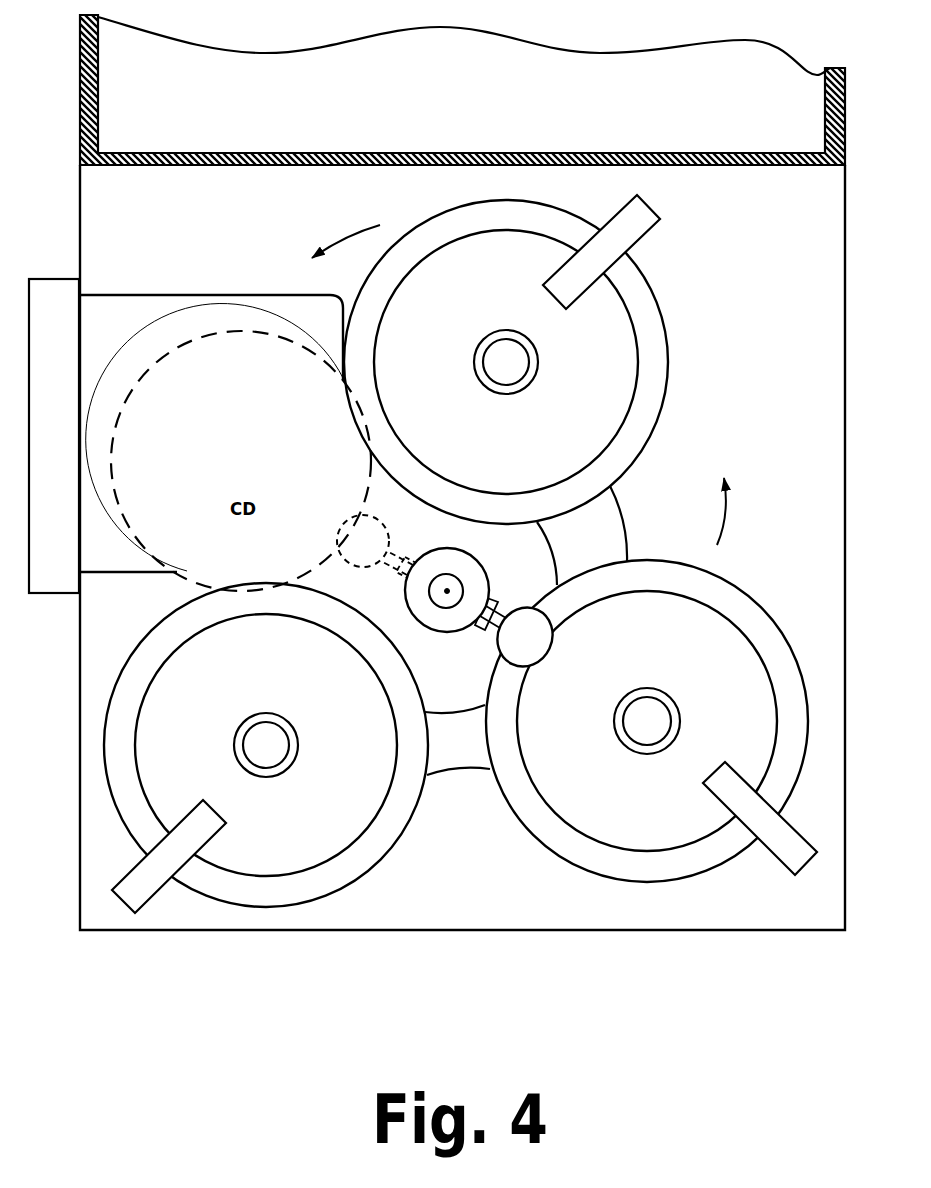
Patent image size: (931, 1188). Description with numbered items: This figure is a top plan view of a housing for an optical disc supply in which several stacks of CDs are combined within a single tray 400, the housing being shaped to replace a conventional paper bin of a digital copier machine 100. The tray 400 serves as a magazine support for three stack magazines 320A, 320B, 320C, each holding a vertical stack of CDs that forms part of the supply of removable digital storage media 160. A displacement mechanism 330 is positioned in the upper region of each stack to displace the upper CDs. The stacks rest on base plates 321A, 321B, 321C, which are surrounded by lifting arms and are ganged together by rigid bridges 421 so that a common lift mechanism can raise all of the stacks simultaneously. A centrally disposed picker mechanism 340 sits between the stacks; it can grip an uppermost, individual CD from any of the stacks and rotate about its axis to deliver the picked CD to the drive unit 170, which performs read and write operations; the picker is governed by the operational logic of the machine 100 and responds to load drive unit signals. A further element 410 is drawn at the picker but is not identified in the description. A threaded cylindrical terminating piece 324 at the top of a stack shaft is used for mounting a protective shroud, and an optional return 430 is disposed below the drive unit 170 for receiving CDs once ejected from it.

The digital copier machine 100 is at (168, 131).
The supply of removable digital storage media 160 is at (168, 236).
The drive unit 170 is at (123, 329).
The return 430 is at (70, 579).
The stack magazine 320A is at (395, 809).
The stack magazine 320B is at (556, 834).
The stack magazine 320C is at (647, 350).
The base plate 321A is at (353, 863).
The base plate 321B is at (655, 868).
The base plate 321C is at (645, 322).
The cylindrical terminating piece 324 is at (647, 722).
The displacement mechanism 330 is at (635, 225).
The picker mechanism 340 is at (477, 551).
The pivot axis 410 is at (447, 592).
The rigid bridges 421 is at (601, 551).
The tray 400 is at (449, 962).